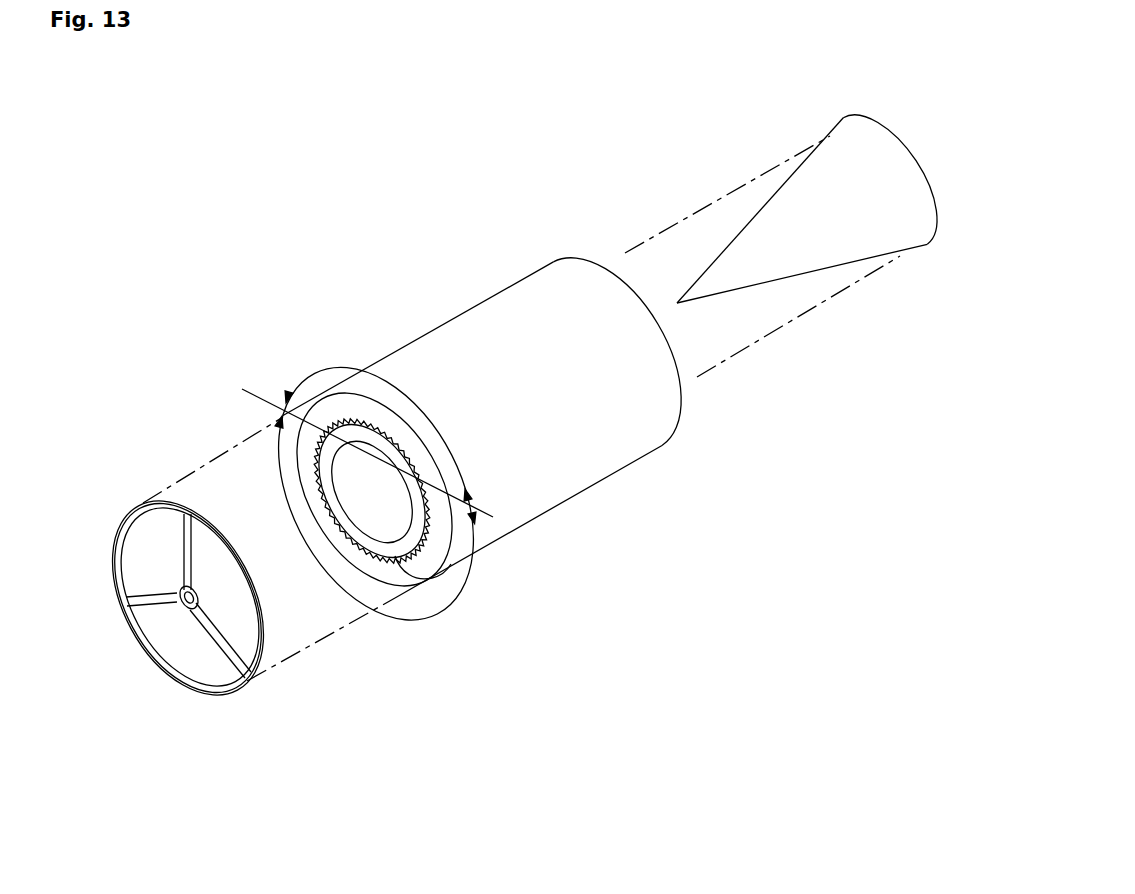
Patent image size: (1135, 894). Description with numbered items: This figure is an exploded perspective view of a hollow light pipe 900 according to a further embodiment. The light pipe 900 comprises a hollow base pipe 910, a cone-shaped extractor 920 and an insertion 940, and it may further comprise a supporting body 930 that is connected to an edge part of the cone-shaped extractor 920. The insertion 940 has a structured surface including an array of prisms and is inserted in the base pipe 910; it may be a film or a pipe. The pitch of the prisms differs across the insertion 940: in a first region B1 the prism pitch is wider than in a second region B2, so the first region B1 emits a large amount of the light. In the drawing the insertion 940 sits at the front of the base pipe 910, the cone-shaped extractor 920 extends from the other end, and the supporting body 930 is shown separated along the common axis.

The light pipe 900 is at (410, 112).
The hollow base pipe 910 is at (542, 502).
The cone-shaped extractor 920 is at (822, 264).
The supporting body 930 is at (223, 693).
The insertion 940 is at (432, 578).
The first region B1 is at (376, 494).
The second region B2 is at (375, 509).